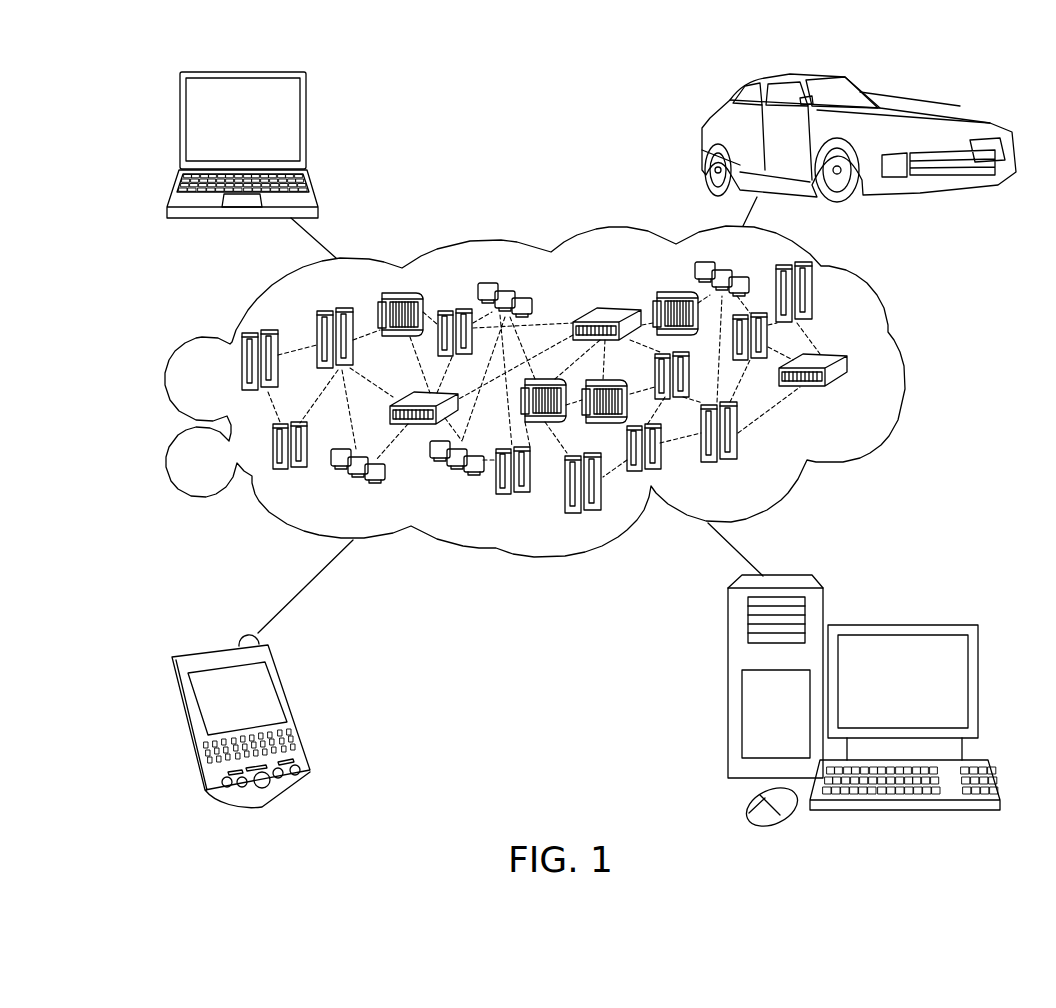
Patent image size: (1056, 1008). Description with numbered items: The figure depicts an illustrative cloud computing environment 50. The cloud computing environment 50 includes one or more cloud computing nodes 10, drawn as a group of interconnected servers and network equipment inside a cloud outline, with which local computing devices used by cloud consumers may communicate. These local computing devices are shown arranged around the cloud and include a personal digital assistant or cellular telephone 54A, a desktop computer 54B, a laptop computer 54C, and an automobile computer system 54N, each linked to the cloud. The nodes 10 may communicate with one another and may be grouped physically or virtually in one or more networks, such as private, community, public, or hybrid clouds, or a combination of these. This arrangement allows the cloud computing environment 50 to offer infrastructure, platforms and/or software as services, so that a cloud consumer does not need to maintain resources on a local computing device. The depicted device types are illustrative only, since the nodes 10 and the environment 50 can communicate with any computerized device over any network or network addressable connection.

The cloud computing nodes 10 is at (850, 398).
The cloud computing environment 50 is at (903, 368).
The personal digital assistant or cellular telephone 54A is at (297, 710).
The desktop computer 54B is at (902, 625).
The laptop computer 54C is at (306, 123).
The automobile computer system 54N is at (703, 143).